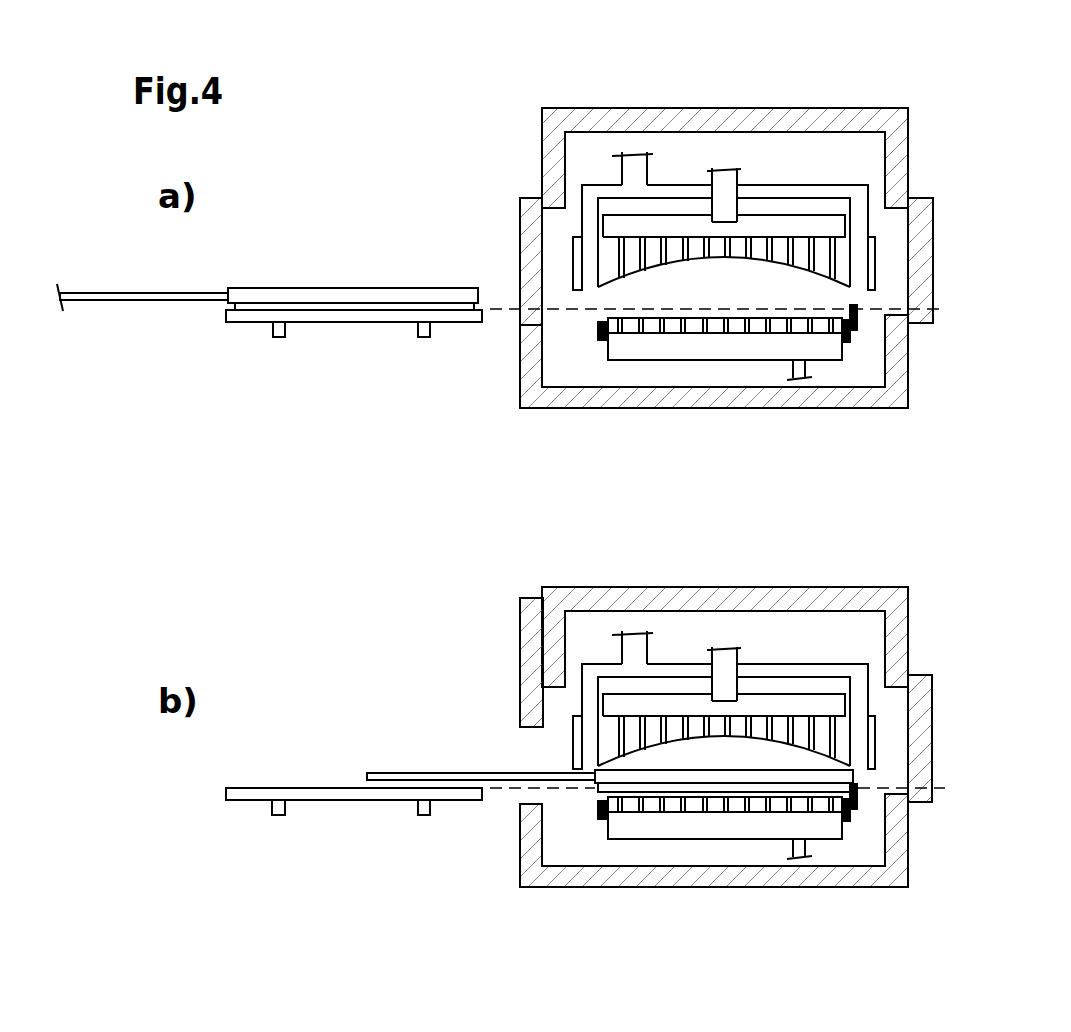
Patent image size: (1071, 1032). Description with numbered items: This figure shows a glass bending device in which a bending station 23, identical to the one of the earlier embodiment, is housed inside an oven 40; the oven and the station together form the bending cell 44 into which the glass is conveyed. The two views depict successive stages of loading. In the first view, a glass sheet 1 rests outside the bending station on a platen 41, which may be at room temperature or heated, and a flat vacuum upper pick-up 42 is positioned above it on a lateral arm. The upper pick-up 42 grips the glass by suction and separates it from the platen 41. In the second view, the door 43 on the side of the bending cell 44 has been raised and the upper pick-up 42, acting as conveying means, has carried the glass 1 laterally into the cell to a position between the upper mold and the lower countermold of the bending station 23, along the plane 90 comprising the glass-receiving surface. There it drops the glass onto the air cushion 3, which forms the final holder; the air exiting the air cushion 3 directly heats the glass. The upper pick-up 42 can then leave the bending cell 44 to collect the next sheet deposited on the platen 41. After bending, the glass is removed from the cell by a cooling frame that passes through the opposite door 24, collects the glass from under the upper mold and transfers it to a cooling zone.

The bending cell 44 is at (863, 99).
The oven 40 is at (628, 118).
The bending station 23 is at (783, 164).
The air cushion 3 is at (693, 325).
The door 43 is at (528, 232).
The door 24 is at (921, 310).
The plane 90 is at (573, 313).
The platen 41 is at (332, 318).
The flat vacuum upper pick-up 42 is at (308, 298).
The glass sheet 1 is at (398, 300).